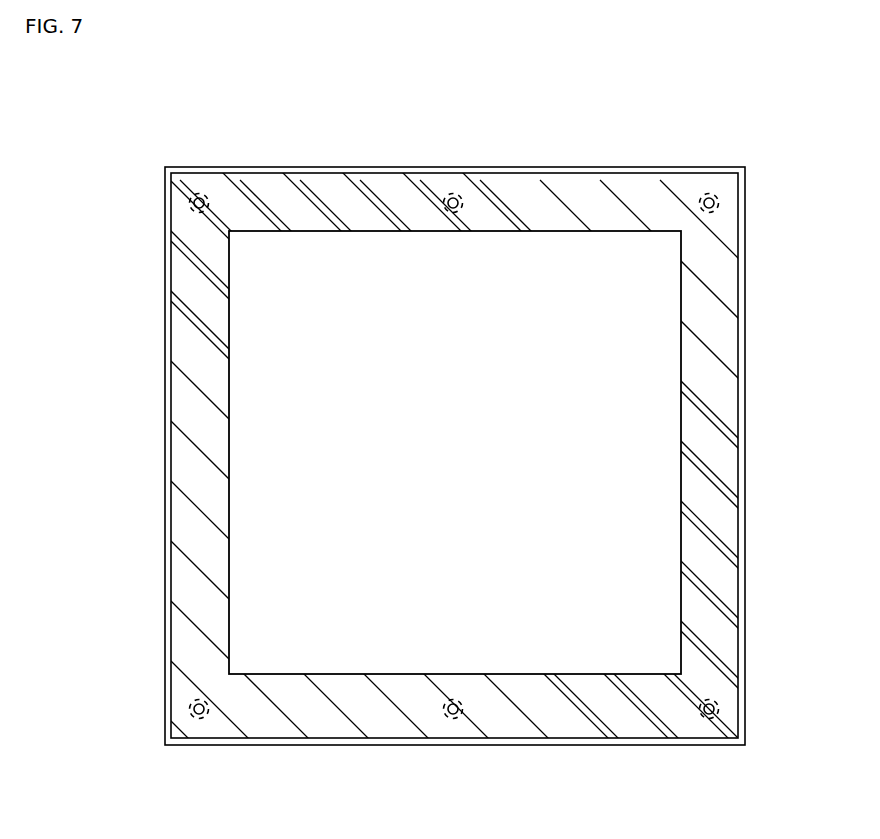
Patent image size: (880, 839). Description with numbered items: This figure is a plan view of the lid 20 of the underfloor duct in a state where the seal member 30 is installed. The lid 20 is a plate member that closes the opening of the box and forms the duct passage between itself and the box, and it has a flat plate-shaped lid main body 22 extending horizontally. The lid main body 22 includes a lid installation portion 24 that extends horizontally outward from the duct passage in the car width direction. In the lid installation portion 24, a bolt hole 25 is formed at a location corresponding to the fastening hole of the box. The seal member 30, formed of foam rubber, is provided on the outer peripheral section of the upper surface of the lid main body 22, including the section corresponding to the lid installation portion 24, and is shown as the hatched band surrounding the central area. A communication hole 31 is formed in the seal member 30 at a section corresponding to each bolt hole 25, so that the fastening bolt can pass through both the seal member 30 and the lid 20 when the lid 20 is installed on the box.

The lid 20 is at (708, 142).
The lid main body 22 is at (562, 255).
The lid installation portion 24 is at (318, 208).
The bolt hole 25 is at (466, 190).
The seal member 30 is at (718, 351).
The communication hole 31 is at (451, 196).